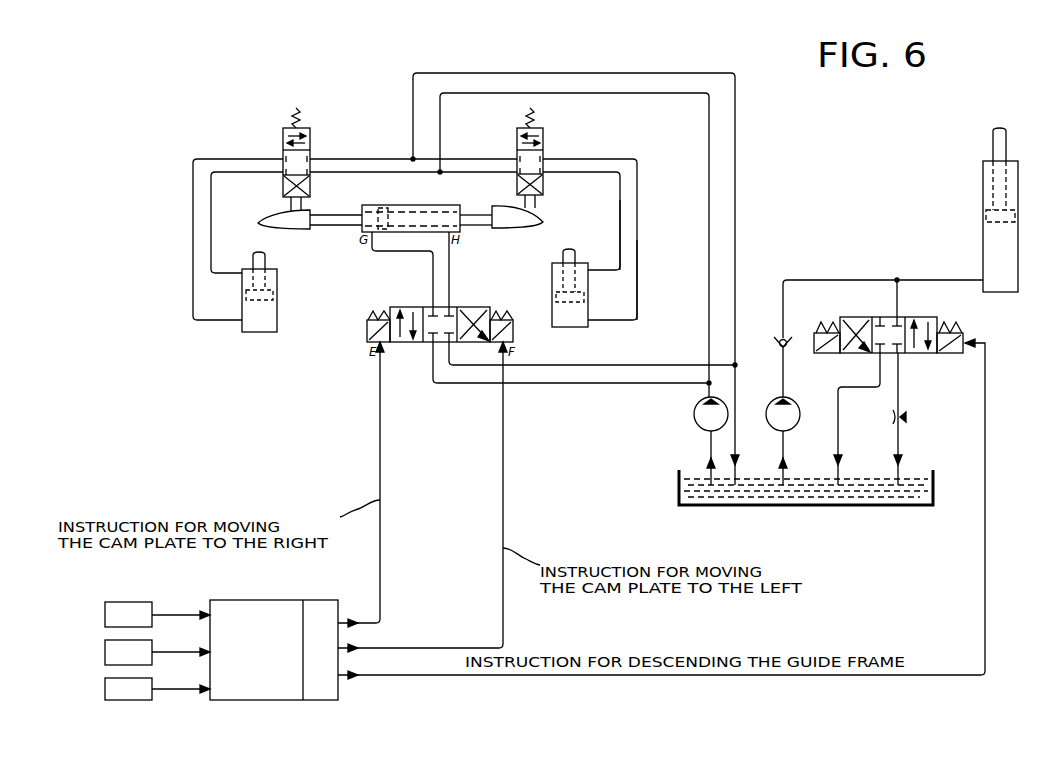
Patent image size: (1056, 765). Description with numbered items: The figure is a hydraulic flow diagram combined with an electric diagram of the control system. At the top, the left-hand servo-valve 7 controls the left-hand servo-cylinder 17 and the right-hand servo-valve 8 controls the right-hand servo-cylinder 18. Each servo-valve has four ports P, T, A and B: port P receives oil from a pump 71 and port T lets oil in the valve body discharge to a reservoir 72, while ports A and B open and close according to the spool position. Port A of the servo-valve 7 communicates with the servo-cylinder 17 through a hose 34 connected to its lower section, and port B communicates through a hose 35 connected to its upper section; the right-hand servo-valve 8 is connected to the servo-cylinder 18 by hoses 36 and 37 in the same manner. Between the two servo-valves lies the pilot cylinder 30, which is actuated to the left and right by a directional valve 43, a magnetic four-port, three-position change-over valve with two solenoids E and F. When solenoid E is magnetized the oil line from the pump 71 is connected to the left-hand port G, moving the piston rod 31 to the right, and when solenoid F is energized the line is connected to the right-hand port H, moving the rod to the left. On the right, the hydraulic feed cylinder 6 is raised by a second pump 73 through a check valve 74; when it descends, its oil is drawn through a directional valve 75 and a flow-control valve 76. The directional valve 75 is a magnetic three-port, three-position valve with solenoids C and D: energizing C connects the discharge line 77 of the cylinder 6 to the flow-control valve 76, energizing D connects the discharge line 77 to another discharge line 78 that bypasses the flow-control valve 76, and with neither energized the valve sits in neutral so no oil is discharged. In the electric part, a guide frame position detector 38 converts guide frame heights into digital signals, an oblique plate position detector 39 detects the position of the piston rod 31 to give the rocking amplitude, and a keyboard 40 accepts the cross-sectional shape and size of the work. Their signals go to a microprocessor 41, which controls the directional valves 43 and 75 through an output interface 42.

The hydraulic feed cylinder 6 is at (1018, 256).
The left-hand servo-valve 7 is at (306, 128).
The right-hand servo-valve 8 is at (543, 132).
The left-hand servo-cylinder 17 is at (262, 333).
The right-hand servo-cylinder 18 is at (573, 328).
The pilot cylinder 30 is at (364, 237).
The piston rod 31 is at (322, 215).
The hose 34 is at (222, 142).
The hose 35 is at (211, 211).
The hose 36 is at (620, 208).
The hose 37 is at (637, 262).
The guide frame position detector 38 is at (104, 615).
The oblique plate position detector 39 is at (104, 653).
The keyboard 40 is at (104, 689).
The microprocessor 41 is at (254, 700).
The output interface 42 is at (324, 700).
The directional valve 43 is at (408, 343).
The pump 71 is at (694, 414).
The reservoir 72 is at (679, 489).
The pump 73 is at (770, 399).
The check valve 74 is at (779, 338).
The directional valve 75 is at (920, 354).
The flow-control valve 76 is at (906, 416).
The discharge line 77 is at (898, 305).
The discharge line 78 is at (838, 440).